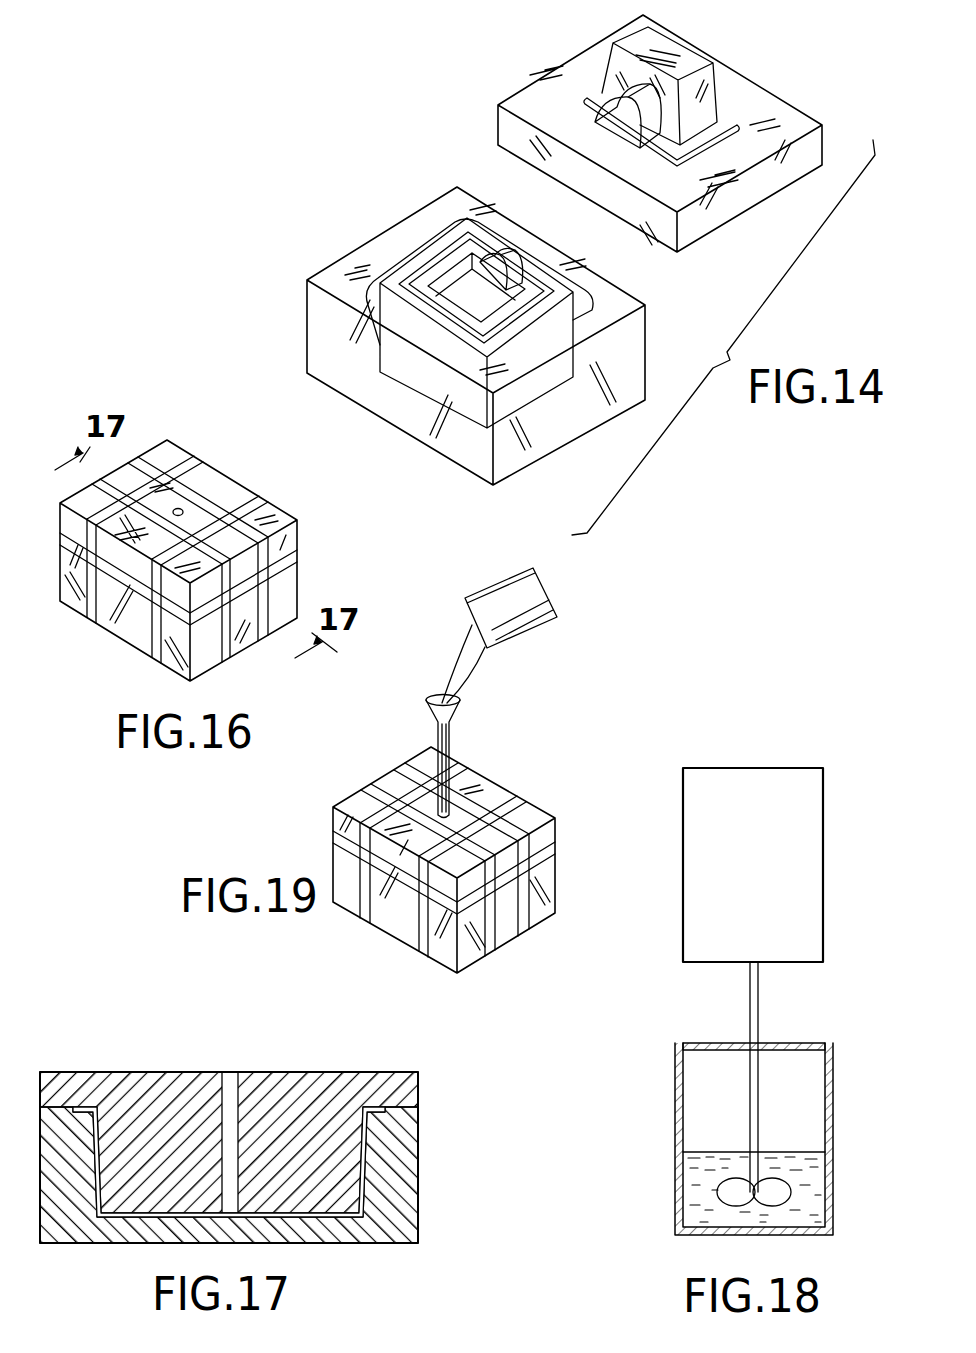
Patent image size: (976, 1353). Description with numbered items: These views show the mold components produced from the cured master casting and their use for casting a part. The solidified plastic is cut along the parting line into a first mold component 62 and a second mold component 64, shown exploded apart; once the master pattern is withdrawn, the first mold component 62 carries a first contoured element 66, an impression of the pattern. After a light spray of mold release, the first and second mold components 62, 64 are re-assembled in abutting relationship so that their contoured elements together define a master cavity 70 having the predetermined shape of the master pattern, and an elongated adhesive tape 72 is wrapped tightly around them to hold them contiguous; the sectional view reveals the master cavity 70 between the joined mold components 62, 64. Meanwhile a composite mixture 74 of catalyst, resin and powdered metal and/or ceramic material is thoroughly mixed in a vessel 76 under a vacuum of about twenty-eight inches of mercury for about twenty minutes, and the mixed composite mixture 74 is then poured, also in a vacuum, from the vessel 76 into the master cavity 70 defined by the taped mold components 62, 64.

In FIG. 14, the first mold component 62 is at (555, 80).
In FIG. 16, the first mold component 62 is at (228, 492).
In FIG. 19, the first mold component 62 is at (492, 793).
In FIG. 17, the first mold component 62 is at (407, 1093).
In FIG. 14, the second mold component 64 is at (342, 272).
In FIG. 16, the second mold component 64 is at (122, 625).
In FIG. 19, the second mold component 64 is at (502, 927).
In FIG. 17, the second mold component 64 is at (72, 1237).
In FIG. 14, the first contoured element 66 is at (673, 50).
In FIG. 17, the master cavity 70 is at (367, 1190).
In FIG. 16, the elongated adhesive tape 72 is at (68, 540).
In FIG. 19, the composite mixture 74 is at (463, 645).
In FIG. 18, the composite mixture 74 is at (814, 1187).
In FIG. 19, the vessel 76 is at (515, 588).
In FIG. 18, the vessel 76 is at (835, 1088).